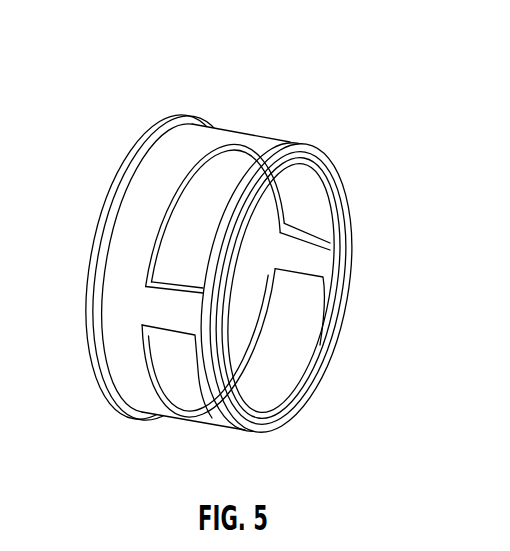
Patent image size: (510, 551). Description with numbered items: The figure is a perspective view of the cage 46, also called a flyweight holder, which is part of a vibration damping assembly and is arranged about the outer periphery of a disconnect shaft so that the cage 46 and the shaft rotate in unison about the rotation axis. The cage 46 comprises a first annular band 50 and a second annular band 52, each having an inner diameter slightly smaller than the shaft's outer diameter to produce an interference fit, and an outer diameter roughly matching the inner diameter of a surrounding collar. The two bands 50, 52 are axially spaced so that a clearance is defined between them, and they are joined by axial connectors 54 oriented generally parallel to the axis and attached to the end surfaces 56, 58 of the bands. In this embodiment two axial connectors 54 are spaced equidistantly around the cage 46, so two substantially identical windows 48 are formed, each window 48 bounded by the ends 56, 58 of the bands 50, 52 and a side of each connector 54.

The cage 46 is at (358, 86).
The window 48 is at (183, 230).
The first annular band 50 is at (197, 134).
The second annular band 52 is at (282, 142).
The axial connector 54 is at (345, 227).
The end surface 56 is at (333, 318).
The end surface 58 is at (288, 345).